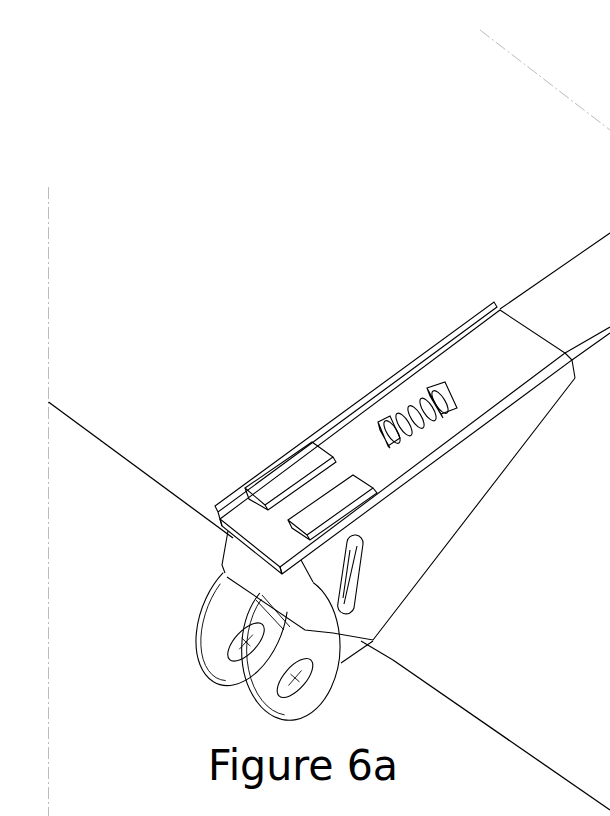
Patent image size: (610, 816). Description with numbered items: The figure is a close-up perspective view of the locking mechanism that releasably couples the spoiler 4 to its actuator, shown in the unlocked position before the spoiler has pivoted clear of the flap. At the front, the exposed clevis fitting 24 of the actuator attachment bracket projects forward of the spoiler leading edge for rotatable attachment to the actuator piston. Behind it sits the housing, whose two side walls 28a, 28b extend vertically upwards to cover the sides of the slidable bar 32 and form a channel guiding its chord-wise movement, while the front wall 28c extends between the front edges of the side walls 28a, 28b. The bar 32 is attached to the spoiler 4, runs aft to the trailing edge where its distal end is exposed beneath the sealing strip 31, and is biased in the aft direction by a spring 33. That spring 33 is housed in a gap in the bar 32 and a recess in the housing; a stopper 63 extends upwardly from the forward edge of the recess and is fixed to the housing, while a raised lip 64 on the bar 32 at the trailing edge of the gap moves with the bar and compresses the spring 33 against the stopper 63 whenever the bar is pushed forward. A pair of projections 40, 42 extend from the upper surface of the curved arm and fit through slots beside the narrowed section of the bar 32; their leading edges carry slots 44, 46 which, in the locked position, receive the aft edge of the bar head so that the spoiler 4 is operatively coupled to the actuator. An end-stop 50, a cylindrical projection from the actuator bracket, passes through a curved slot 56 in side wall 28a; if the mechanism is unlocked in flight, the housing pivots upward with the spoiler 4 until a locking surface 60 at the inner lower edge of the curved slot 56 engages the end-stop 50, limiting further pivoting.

The spoiler 4 is at (269, 352).
The clevis fitting 24 is at (310, 687).
The side wall 28a is at (445, 515).
The side wall 28b is at (347, 410).
The front wall 28c is at (293, 587).
The sealing strip 31 is at (609, 97).
The slidable bar 32 is at (556, 310).
The spring 33 is at (408, 407).
The projection 40 is at (277, 483).
The projection 42 is at (343, 495).
The slot 44 is at (250, 503).
The slot 46 is at (289, 538).
The end-stop 50 is at (362, 548).
The curved slot 56 is at (352, 574).
The locking surface 60 is at (348, 607).
The stopper 63 is at (393, 435).
The raised lip 64 is at (447, 395).